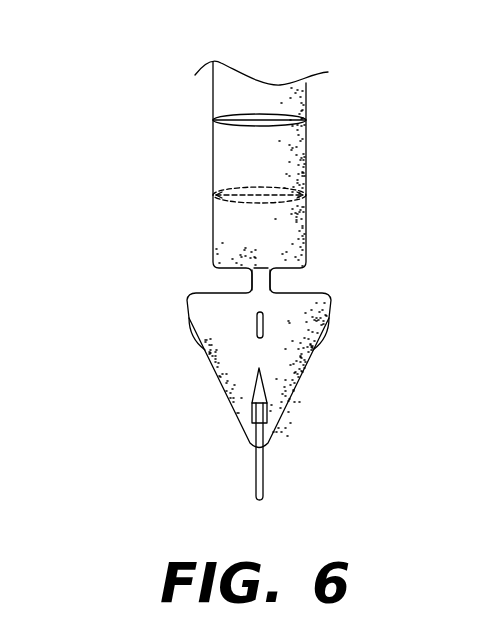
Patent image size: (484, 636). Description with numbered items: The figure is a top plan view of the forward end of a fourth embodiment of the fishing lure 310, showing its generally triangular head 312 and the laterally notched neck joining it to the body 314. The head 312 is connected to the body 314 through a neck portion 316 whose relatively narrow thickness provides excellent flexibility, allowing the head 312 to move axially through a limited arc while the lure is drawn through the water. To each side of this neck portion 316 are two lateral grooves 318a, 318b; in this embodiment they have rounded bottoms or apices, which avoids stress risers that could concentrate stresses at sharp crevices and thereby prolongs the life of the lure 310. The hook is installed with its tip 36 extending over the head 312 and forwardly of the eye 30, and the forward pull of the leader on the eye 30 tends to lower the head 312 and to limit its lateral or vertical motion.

The lure 310 is at (125, 105).
The body 314 is at (218, 150).
The neck portion 316 is at (259, 270).
The groove 318a is at (293, 286).
The groove 318b is at (228, 286).
The head 312 is at (217, 365).
The eye 30 is at (263, 341).
The tip 36 is at (267, 413).